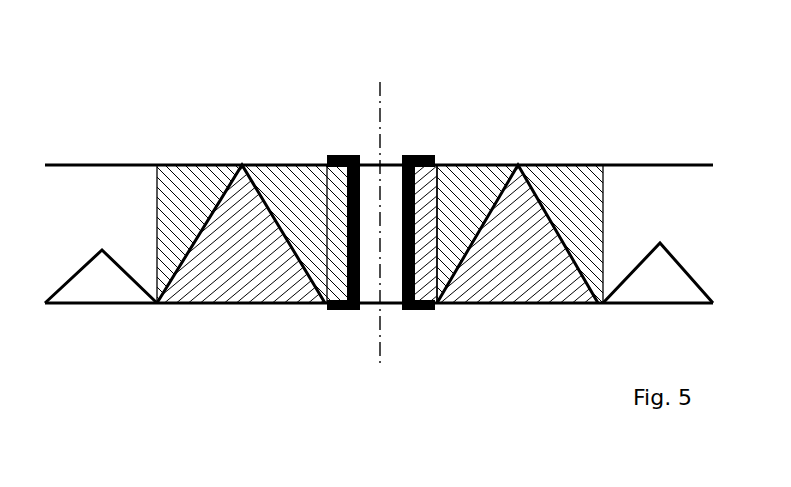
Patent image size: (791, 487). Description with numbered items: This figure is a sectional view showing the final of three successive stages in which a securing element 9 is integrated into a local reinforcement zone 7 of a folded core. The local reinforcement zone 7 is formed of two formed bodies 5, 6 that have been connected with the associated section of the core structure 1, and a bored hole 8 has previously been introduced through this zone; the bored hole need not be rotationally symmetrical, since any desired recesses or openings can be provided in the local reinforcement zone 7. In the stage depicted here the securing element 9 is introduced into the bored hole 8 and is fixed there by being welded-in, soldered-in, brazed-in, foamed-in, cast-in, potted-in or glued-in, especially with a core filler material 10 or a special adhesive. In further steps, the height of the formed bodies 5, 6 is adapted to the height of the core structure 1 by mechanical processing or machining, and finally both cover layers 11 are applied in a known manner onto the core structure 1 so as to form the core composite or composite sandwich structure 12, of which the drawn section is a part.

The core structure 1 is at (690, 267).
The formed body 5 is at (185, 292).
The formed body 6 is at (192, 190).
The local reinforcement zone 7 is at (447, 82).
The bored hole 8 is at (387, 188).
The securing element 9 is at (338, 305).
The core filler material 10 is at (336, 188).
The cover layer 11 is at (676, 165).
The composite sandwich structure 12 is at (101, 90).